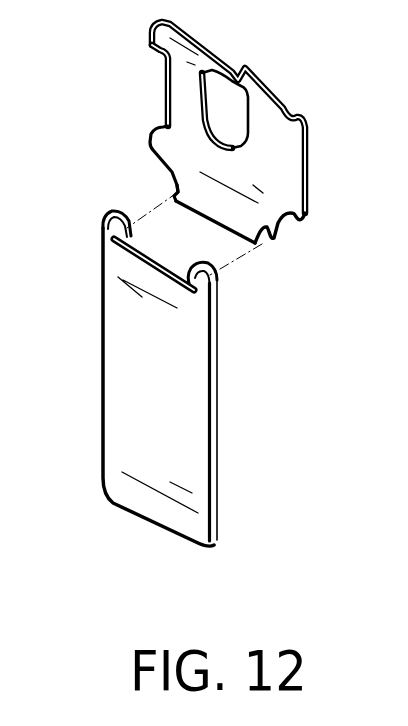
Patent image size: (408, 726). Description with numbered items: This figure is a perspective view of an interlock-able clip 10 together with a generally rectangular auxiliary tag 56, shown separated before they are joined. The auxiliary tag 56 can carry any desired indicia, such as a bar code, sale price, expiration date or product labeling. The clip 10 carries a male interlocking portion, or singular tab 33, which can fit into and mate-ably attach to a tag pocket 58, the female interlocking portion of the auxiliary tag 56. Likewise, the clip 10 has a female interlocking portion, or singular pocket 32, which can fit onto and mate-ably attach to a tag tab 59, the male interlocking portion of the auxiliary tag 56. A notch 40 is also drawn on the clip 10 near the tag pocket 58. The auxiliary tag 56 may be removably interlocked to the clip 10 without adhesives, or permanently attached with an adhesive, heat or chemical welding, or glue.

The interlock-able clip 10 is at (262, 115).
The singular pocket 32 is at (167, 102).
The notch 40 is at (160, 202).
The singular tab 33 is at (303, 216).
The tag tab 59 is at (244, 233).
The auxiliary tag 56 is at (137, 360).
The tag pocket 58 is at (159, 270).